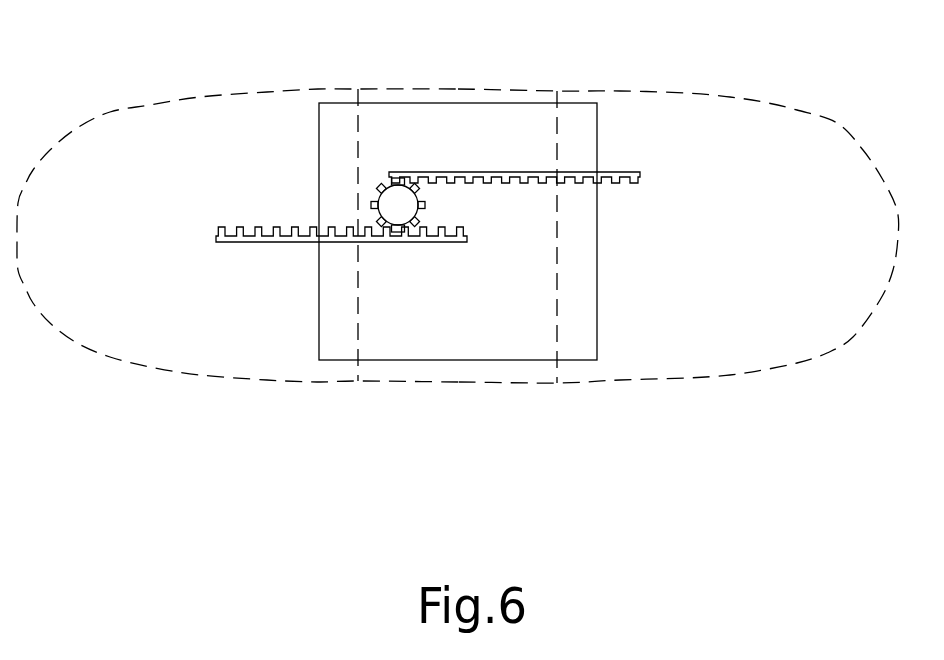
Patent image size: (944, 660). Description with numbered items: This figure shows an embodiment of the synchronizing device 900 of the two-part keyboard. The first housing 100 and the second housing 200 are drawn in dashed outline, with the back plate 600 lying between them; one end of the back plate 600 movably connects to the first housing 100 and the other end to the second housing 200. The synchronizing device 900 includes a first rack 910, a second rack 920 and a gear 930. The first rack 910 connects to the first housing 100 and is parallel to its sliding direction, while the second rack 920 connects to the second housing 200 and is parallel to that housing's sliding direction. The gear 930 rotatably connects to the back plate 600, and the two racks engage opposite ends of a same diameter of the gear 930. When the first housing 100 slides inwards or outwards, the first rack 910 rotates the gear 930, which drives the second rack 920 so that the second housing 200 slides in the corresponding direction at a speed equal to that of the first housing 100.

The first housing 100 is at (117, 325).
The second housing 200 is at (842, 315).
The back plate 600 is at (435, 128).
The synchronizing device 900 is at (500, 150).
The first rack 910 is at (285, 223).
The second rack 920 is at (584, 172).
The gear 930 is at (399, 197).